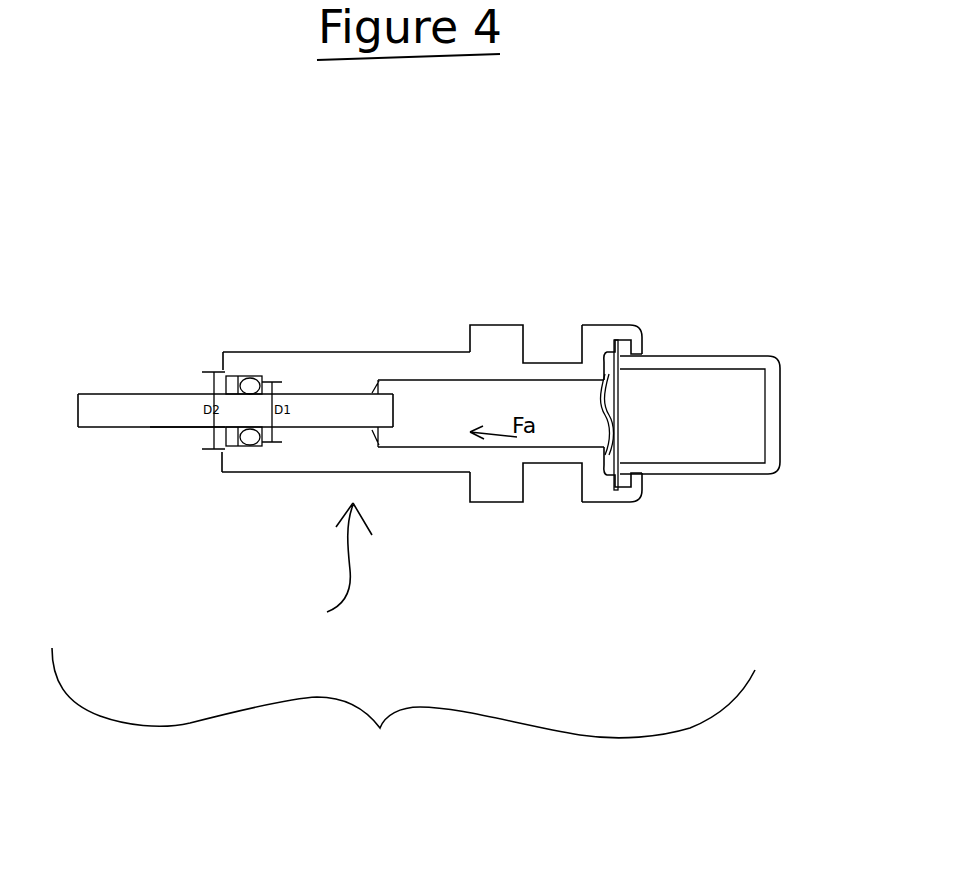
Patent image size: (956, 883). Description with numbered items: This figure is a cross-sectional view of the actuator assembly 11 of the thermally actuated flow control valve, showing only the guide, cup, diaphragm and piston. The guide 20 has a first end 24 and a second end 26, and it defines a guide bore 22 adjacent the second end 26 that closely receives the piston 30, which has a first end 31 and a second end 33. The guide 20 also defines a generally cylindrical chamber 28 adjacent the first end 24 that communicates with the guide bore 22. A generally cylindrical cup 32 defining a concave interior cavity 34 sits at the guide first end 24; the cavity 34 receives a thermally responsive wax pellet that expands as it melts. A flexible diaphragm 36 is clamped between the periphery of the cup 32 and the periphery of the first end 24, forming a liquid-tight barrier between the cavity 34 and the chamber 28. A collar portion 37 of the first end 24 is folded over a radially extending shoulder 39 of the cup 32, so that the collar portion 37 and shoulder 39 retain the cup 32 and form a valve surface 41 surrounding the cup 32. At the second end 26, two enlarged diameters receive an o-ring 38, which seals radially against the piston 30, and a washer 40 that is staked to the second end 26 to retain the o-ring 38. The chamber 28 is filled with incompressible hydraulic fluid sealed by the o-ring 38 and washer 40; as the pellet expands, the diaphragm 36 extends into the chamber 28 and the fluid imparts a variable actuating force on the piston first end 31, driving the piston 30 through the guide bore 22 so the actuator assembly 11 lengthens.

The actuator assembly 11 is at (403, 715).
The guide 20 is at (333, 586).
The guide bore 22 is at (346, 392).
The first end 24 is at (588, 325).
The second end 26 is at (223, 350).
The chamber 28 is at (503, 388).
The piston 30 is at (183, 428).
The first end 31 is at (398, 430).
The cup 32 is at (717, 472).
The second end 33 is at (80, 394).
The interior cavity 34 is at (722, 357).
The diaphragm 36 is at (637, 488).
The collar portion 37 is at (613, 326).
The o-ring 38 is at (249, 384).
The shoulder 39 is at (617, 487).
The washer 40 is at (228, 452).
The valve surface 41 is at (638, 337).